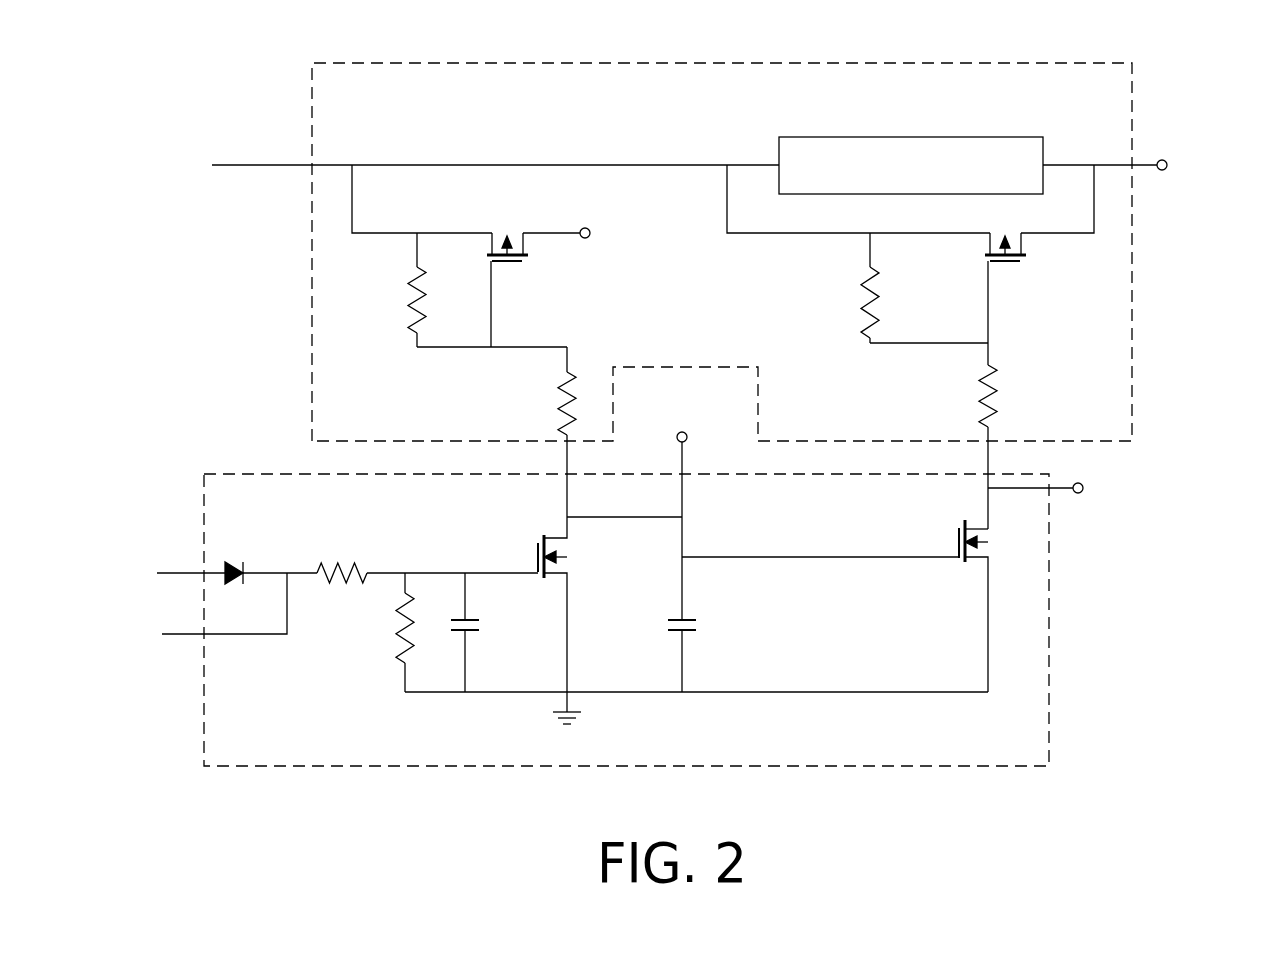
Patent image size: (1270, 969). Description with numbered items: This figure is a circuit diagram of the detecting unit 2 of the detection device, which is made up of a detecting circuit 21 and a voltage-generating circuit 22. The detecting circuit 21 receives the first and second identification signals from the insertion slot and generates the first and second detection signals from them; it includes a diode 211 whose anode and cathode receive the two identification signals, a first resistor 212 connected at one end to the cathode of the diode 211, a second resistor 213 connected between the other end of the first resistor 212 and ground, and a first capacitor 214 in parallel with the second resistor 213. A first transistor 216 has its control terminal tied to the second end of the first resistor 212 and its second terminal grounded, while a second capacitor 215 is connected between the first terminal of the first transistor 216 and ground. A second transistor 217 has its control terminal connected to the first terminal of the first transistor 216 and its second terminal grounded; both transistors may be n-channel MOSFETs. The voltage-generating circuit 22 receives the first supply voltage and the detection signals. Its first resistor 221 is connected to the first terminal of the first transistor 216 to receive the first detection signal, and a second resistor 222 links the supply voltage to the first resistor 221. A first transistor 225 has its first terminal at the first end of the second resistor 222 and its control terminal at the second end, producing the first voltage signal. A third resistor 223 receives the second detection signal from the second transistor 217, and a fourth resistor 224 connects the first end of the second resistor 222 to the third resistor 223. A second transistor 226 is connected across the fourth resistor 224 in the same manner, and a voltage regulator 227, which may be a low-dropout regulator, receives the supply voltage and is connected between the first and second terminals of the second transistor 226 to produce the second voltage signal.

The detecting unit 2 is at (1155, 76).
The detecting circuit 21 is at (1049, 668).
The voltage-generating circuit 22 is at (688, 63).
The diode 211 is at (231, 559).
The first resistor 212 is at (322, 585).
The second resistor 213 is at (395, 640).
The first capacitor 214 is at (470, 630).
The second capacitor 215 is at (688, 630).
The first transistor 216 is at (587, 569).
The second transistor 217 is at (1000, 552).
The first resistor 221 is at (560, 393).
The second resistor 222 is at (410, 308).
The third resistor 223 is at (1000, 380).
The fourth resistor 224 is at (868, 290).
The first transistor 225 is at (519, 226).
The second transistor 226 is at (1046, 259).
The voltage regulator 227 is at (968, 137).